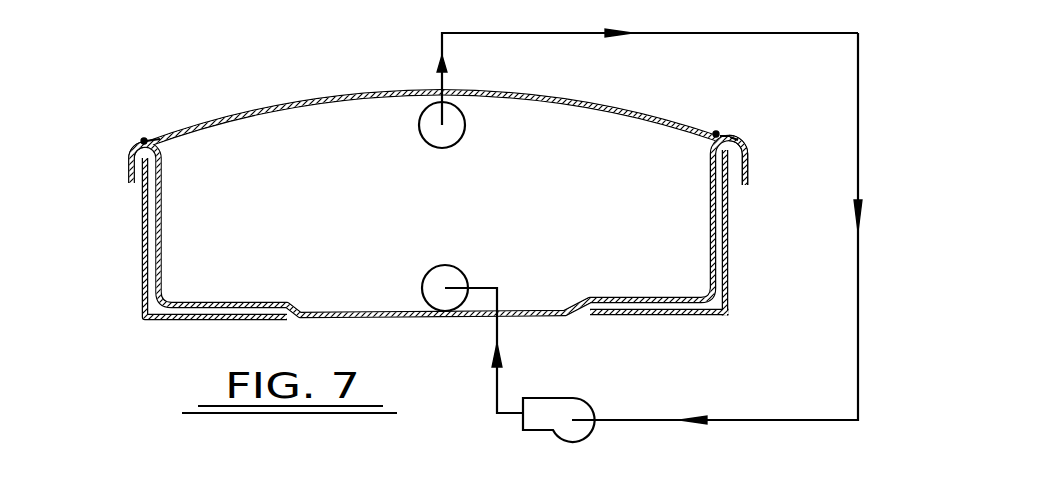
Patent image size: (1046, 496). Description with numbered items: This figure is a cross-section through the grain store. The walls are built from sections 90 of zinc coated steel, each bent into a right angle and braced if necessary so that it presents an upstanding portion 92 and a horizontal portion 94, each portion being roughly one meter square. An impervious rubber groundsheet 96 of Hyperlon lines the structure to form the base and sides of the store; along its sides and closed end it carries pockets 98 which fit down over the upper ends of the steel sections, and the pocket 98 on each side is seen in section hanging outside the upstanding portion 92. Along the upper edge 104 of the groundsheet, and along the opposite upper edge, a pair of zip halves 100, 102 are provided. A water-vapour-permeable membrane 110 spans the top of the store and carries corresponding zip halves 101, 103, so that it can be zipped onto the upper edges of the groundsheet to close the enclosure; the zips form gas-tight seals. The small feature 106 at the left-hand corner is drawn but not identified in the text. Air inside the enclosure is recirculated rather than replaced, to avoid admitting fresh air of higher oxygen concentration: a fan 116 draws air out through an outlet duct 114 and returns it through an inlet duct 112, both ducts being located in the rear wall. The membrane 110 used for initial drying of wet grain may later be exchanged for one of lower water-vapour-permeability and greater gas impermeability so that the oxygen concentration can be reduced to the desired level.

The section 90 is at (142, 305).
The upstanding portion 92 is at (730, 232).
The horizontal portion 94 is at (673, 318).
The rubber groundsheet 96 is at (407, 318).
The pocket 98 is at (748, 167).
The zip half 100 is at (725, 134).
The zip half 101 is at (715, 133).
The zip half 102 is at (143, 141).
The zip half 103 is at (148, 139).
The upper edge 104 is at (733, 136).
The left liner flap 106 is at (140, 147).
The water-vapour-permeable membrane 110 is at (418, 88).
The inlet duct 112 is at (460, 278).
The outlet duct 114 is at (457, 128).
The fan 116 is at (557, 440).